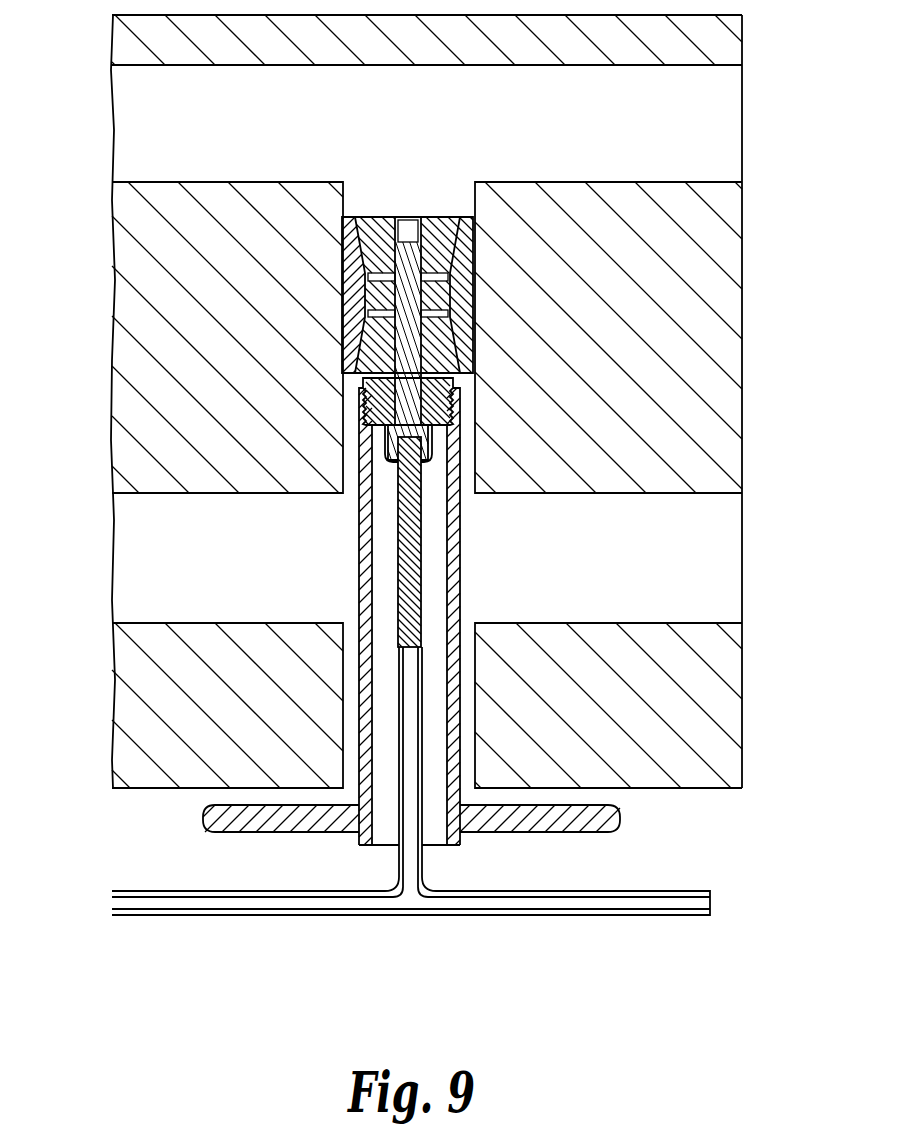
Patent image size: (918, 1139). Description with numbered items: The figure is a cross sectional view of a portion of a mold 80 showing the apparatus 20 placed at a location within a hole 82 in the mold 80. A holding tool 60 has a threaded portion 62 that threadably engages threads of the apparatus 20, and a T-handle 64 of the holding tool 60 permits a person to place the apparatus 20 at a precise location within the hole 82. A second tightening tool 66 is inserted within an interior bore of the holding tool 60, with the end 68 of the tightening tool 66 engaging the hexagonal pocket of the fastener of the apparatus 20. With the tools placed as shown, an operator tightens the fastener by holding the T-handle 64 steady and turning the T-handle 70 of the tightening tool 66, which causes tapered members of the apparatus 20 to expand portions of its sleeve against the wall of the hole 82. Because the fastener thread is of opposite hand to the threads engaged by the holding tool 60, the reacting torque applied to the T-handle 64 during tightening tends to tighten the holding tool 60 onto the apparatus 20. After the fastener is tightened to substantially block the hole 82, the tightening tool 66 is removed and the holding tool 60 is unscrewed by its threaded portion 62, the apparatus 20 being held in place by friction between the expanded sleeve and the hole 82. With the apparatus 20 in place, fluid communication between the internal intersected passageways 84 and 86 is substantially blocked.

The apparatus 20 is at (441, 217).
The holding tool 60 is at (452, 572).
The threaded portion 62 is at (458, 408).
The T-handle 64 is at (235, 812).
The tightening tool 66 is at (407, 590).
The end 68 is at (410, 457).
The T-handle 70 is at (645, 903).
The mold 80 is at (155, 685).
The hole 82 is at (476, 204).
The internal intersected passageway 84 is at (223, 150).
The internal intersected passageway 86 is at (209, 552).